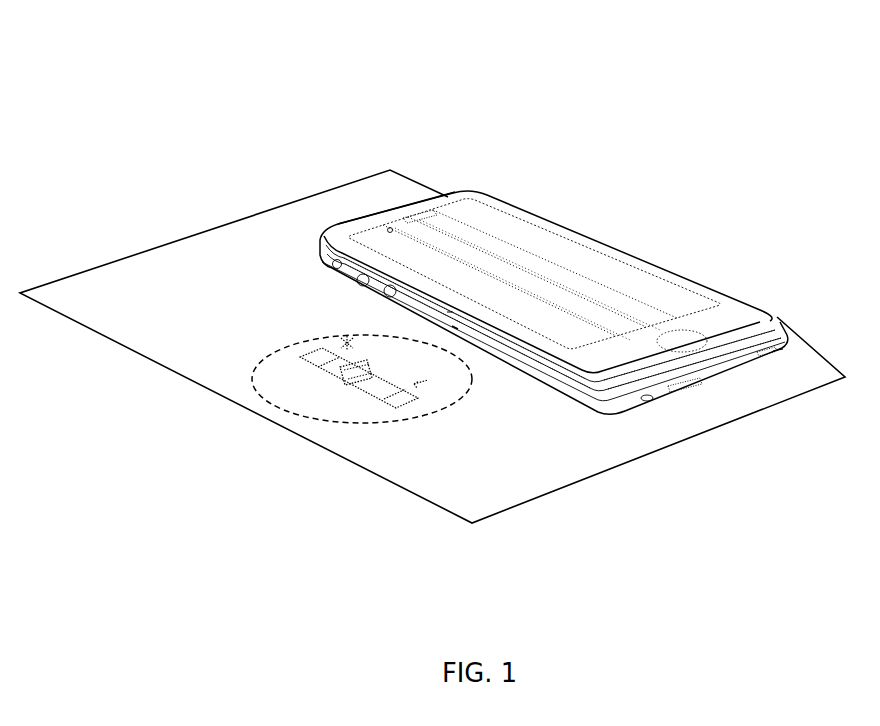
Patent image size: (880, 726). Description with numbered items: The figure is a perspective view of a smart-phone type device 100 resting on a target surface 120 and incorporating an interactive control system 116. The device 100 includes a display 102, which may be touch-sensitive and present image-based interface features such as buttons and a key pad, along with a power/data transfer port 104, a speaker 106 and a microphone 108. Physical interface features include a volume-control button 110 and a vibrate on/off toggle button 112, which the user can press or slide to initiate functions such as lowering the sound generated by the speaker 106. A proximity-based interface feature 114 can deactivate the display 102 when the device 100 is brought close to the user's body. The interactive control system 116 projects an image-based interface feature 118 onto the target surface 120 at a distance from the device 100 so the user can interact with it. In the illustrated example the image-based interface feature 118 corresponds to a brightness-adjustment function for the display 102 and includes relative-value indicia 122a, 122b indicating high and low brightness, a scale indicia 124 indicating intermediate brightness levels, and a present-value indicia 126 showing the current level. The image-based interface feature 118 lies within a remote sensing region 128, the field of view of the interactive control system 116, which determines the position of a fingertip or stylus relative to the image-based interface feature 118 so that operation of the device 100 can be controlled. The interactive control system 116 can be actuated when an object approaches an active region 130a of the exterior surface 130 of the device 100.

The device 100 is at (613, 190).
The display 102 is at (628, 282).
The power/data transfer port 104 is at (735, 364).
The speaker 106 is at (773, 351).
The microphone 108 is at (646, 397).
The volume-control button 110 is at (388, 290).
The vibrate on/off toggle button 112 is at (333, 263).
The proximity-based interface feature 114 is at (407, 218).
The interactive control system 116 is at (450, 308).
The image-based interface feature 118 is at (278, 403).
The target surface 120 is at (155, 305).
The relative-value indicia 122a is at (345, 342).
The relative-value indicia 122b is at (429, 382).
The scale indicia 124 is at (368, 388).
The present-value indicia 126 is at (341, 380).
The remote sensing region 128 is at (262, 365).
The exterior surface 130 is at (566, 385).
The active region 130a is at (453, 329).